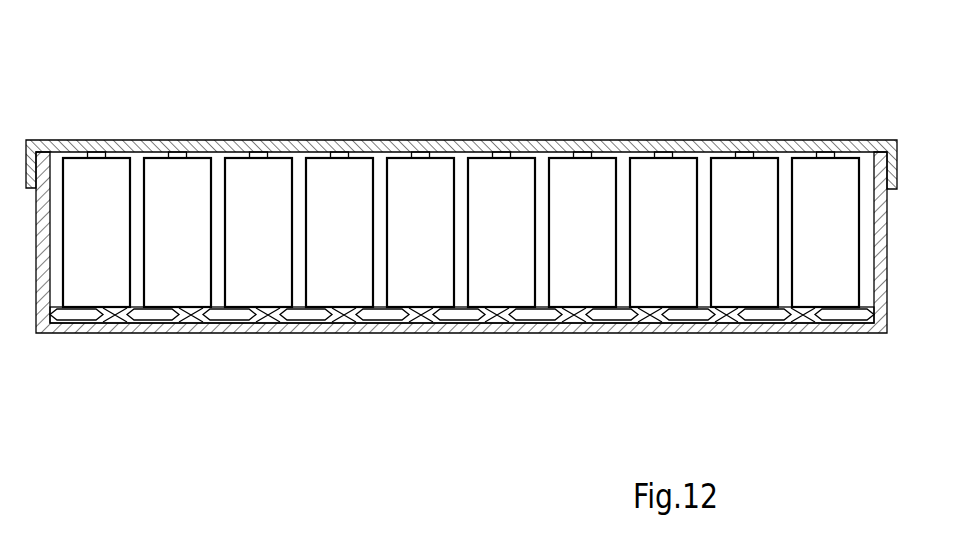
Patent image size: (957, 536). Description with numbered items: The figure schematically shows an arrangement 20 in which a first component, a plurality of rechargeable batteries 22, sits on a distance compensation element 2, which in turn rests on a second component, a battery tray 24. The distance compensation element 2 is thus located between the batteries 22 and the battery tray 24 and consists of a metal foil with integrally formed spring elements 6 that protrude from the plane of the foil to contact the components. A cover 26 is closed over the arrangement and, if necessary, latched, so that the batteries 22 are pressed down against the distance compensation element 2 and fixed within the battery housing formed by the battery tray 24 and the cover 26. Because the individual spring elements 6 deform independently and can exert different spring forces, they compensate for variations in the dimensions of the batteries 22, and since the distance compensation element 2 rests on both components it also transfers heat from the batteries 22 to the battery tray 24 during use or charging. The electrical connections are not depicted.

The arrangement 20 is at (461, 212).
The cover 26 is at (228, 140).
The rechargeable batteries 22 is at (462, 359).
The battery tray 24 is at (667, 280).
The distance compensation element 2 is at (410, 309).
The spring elements 6 is at (381, 309).